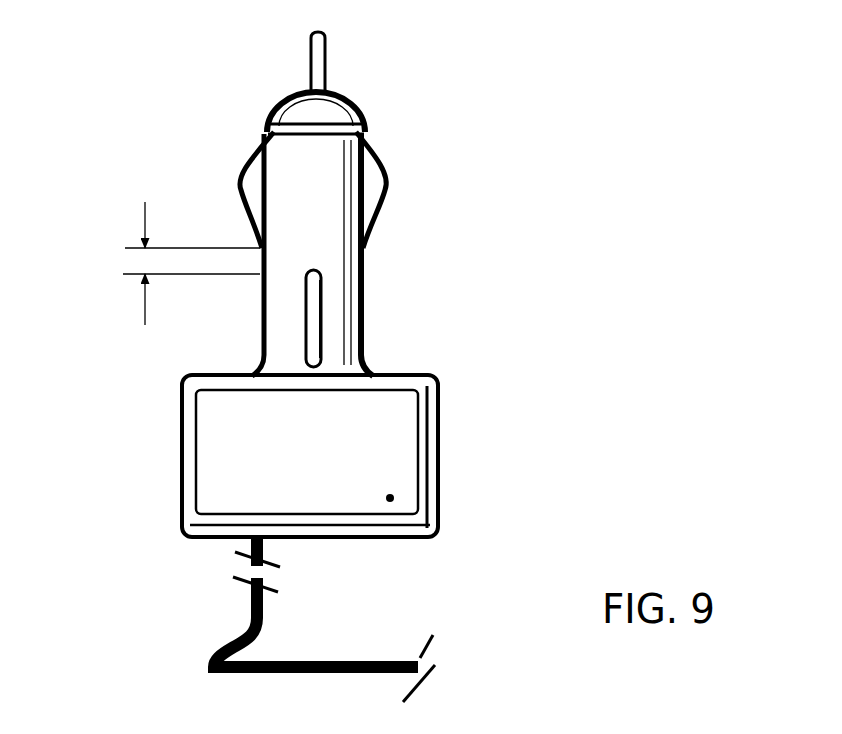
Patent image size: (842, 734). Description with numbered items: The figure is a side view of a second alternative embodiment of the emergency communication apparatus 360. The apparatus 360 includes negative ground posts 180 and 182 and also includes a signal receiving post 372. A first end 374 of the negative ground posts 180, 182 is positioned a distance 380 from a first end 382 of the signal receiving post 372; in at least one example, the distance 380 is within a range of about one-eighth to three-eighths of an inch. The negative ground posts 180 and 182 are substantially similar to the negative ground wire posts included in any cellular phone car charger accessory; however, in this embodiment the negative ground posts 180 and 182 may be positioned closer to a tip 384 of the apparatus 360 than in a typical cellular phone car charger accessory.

The emergency communication apparatus 360 is at (332, 363).
The negative ground post 180 is at (375, 170).
The negative ground post 182 is at (250, 175).
The signal receiving post 372 is at (323, 313).
The first end of negative ground posts 374 is at (373, 252).
The distance 380 is at (132, 262).
The first end of signal receiving posts 382 is at (298, 270).
The tip 384 is at (337, 88).